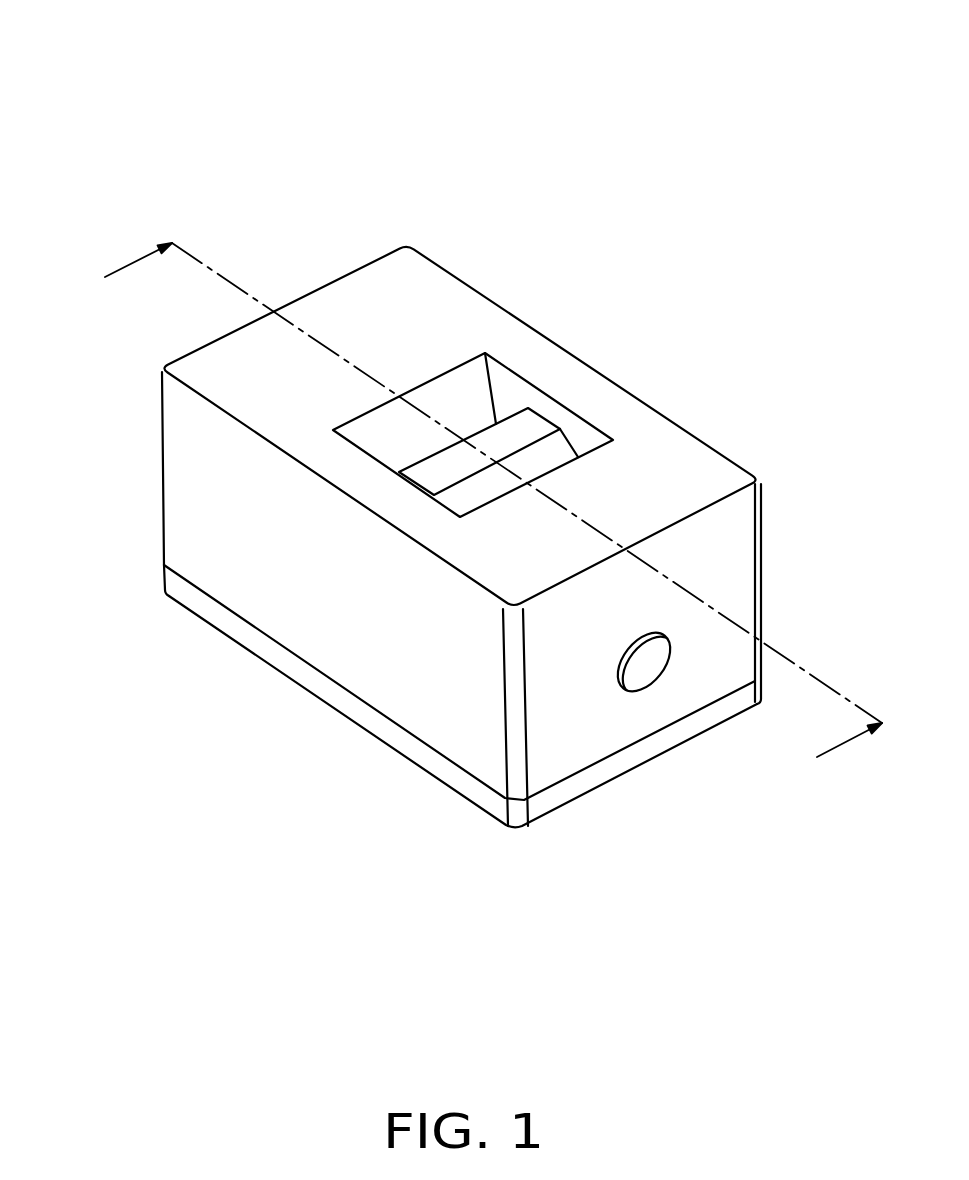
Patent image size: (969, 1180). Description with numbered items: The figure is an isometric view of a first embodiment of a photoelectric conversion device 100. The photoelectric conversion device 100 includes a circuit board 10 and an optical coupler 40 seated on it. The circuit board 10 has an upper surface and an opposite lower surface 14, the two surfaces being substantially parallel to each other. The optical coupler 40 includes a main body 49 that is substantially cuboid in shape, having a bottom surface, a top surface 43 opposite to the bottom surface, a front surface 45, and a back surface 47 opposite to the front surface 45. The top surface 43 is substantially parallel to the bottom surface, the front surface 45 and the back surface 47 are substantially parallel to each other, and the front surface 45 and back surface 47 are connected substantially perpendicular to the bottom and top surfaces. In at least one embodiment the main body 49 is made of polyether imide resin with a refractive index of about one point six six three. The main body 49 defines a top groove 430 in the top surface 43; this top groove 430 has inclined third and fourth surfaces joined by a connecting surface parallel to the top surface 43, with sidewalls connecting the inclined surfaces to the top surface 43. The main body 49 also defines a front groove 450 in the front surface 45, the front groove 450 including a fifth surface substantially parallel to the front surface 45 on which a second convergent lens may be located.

The photoelectric conversion device 100 is at (476, 40).
The circuit board 10 is at (232, 622).
The lower surface 14 is at (573, 802).
The optical coupler 40 is at (150, 385).
The top surface 43 is at (706, 467).
The front surface 45 is at (737, 547).
The back surface 47 is at (159, 495).
The main body 49 is at (193, 446).
The top groove 430 is at (505, 400).
The front groove 450 is at (638, 676).